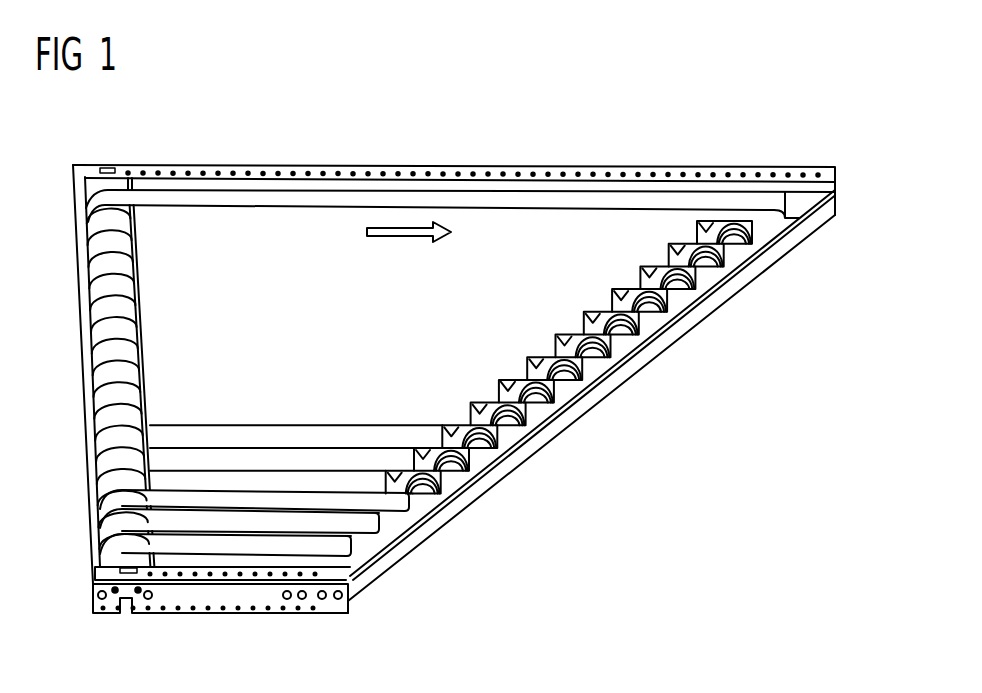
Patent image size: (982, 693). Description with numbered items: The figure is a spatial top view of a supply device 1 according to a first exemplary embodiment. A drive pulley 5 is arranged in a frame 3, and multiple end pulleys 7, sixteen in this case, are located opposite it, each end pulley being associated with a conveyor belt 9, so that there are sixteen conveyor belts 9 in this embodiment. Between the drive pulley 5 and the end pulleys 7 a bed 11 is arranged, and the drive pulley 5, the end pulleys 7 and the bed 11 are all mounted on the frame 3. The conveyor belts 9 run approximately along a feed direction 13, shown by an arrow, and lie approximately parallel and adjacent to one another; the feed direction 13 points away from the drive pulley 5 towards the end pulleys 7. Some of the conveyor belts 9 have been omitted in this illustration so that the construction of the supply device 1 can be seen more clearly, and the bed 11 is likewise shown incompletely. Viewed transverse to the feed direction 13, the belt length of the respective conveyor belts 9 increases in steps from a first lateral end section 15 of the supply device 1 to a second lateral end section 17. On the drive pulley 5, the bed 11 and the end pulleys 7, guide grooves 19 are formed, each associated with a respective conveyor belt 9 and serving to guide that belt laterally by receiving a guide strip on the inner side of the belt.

The supply device 1 is at (742, 138).
The frame 3 is at (642, 355).
The drive pulley 5 is at (97, 282).
The end pulleys 7 is at (455, 495).
The conveyor belt 9 is at (270, 209).
The bed 11 is at (356, 410).
The feed direction 13 is at (403, 237).
The first lateral end section 15 is at (234, 612).
The second lateral end section 17 is at (500, 166).
The guide grooves 19 is at (107, 430).